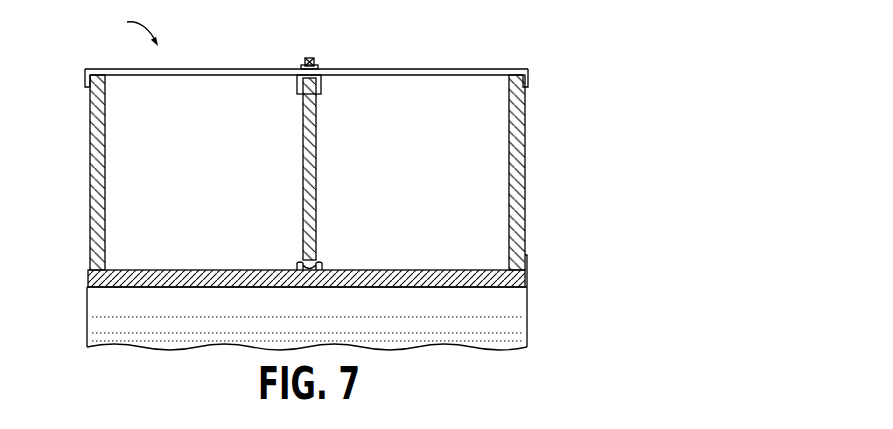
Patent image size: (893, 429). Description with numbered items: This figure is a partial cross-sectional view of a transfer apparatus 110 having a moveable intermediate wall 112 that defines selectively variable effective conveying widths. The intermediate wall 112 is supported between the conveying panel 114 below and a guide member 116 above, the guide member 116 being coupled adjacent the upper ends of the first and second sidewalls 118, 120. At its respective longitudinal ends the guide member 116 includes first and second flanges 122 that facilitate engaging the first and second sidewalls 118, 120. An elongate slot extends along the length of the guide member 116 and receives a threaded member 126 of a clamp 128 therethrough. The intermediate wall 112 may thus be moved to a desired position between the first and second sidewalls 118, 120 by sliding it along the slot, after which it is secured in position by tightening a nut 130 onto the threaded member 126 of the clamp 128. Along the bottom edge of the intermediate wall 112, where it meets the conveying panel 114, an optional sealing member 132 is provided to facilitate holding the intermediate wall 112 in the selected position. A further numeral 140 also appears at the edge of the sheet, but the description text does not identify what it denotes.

The transfer apparatus 110 is at (120, 24).
The intermediate wall 112 is at (303, 176).
The conveying panel 114 is at (478, 288).
The guide member 116 is at (408, 74).
The first sidewall 118 is at (106, 152).
The second sidewall 120 is at (527, 128).
The flange 122 is at (85, 74).
The threaded member 126 is at (304, 60).
The clamp 128 is at (321, 84).
The nut 130 is at (315, 63).
The sealing member 132 is at (320, 264).
The enclosure assembly (adjacent figure) 140 is at (660, 428).